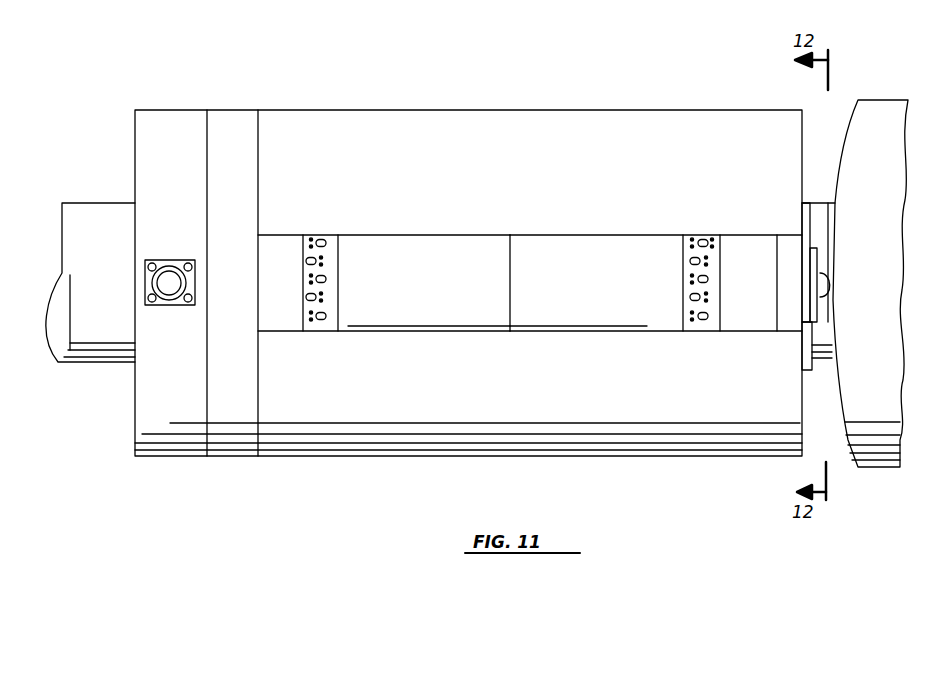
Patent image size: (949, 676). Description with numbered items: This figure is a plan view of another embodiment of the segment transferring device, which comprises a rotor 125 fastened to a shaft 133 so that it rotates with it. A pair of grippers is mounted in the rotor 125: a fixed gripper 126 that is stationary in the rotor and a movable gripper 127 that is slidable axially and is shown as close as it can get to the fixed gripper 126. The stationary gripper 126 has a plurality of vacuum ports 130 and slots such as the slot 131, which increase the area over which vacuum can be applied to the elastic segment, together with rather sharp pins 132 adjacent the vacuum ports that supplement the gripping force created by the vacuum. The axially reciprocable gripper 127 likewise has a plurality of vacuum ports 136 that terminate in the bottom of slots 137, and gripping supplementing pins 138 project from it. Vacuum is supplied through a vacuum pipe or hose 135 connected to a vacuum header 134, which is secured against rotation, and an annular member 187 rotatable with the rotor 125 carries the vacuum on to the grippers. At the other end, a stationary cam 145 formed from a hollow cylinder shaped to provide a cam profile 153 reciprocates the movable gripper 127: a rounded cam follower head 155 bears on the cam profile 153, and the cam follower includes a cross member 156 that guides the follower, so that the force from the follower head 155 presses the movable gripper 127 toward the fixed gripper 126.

The rotor 125 is at (582, 67).
The fixed gripper 126 is at (452, 247).
The movable gripper 127 is at (584, 247).
The vacuum ports 130 is at (308, 237).
The slot 131 is at (324, 242).
The pins 132 is at (309, 252).
The shaft 133 is at (113, 172).
The vacuum header 134 is at (187, 85).
The vacuum pipe or hose 135 is at (165, 262).
The vacuum ports 136 is at (722, 240).
The slots 137 is at (706, 240).
The gripping supplementing pins 138 is at (702, 313).
The stationary cam 145 is at (885, 462).
The cam profile 153 is at (845, 425).
The cam follower head 155 is at (820, 250).
The cross member 156 is at (812, 310).
The annular member 187 is at (235, 115).